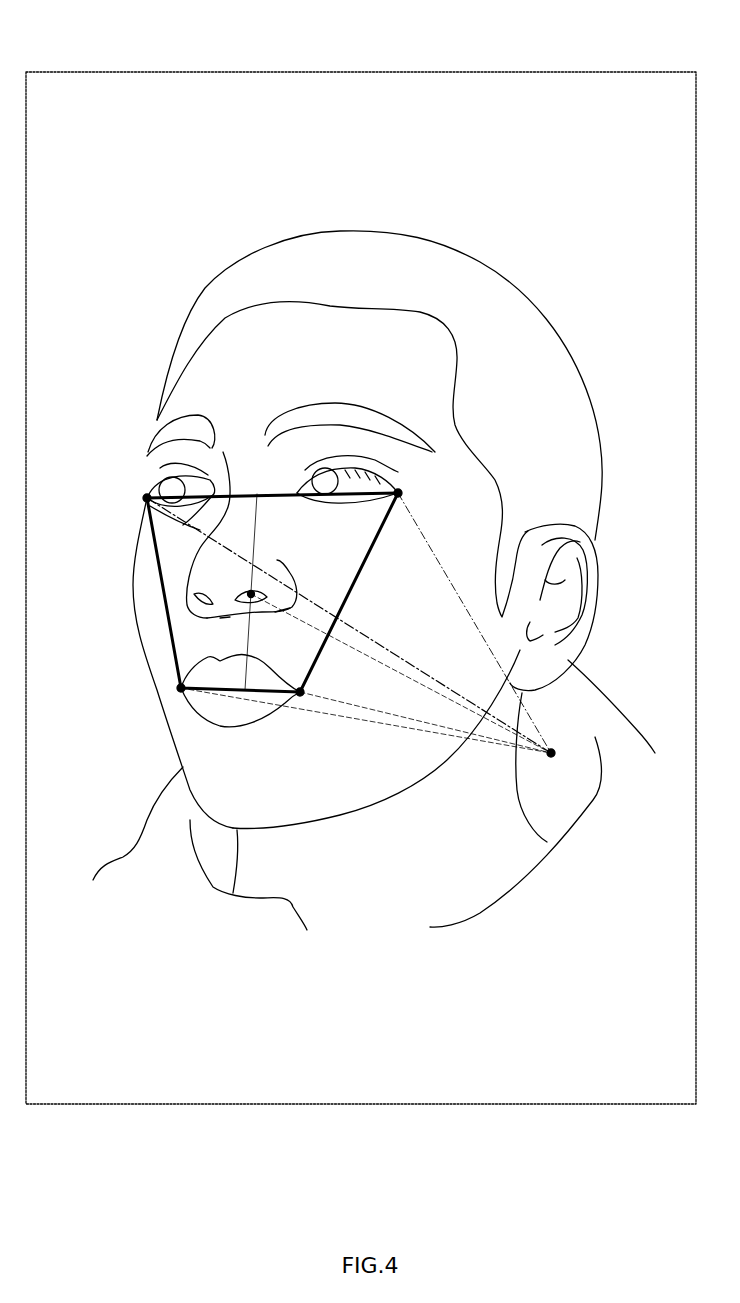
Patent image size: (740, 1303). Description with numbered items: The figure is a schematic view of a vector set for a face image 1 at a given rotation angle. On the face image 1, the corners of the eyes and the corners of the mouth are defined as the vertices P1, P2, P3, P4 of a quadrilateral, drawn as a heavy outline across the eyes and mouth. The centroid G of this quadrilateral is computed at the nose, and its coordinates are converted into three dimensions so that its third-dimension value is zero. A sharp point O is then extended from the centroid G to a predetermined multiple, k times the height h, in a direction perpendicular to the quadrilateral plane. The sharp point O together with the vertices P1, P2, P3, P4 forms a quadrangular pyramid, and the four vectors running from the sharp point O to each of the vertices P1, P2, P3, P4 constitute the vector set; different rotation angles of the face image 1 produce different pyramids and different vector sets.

The face image 1 is at (530, 72).
The vertex of the quadrilateral P1 is at (125, 498).
The vertex of the quadrilateral P2 is at (416, 494).
The vertex of the quadrilateral P3 is at (151, 689).
The vertex of the quadrilateral P4 is at (320, 686).
The centroid G is at (237, 582).
The sharp point O is at (566, 748).